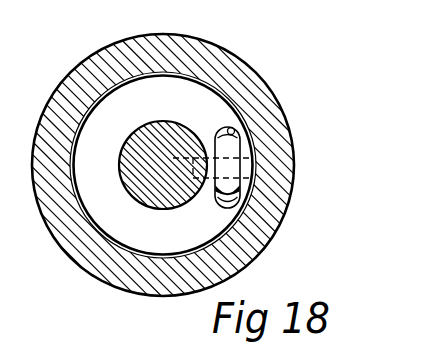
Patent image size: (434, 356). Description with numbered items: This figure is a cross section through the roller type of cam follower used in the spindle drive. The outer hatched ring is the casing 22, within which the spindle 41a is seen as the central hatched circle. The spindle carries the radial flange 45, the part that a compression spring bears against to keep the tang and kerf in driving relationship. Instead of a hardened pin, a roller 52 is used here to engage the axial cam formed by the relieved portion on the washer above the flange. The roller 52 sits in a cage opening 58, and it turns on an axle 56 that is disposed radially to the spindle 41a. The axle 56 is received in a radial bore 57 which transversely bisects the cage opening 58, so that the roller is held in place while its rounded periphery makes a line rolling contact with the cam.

The casing 22 is at (222, 62).
The radial flange 45 is at (107, 176).
The spindle 41a is at (152, 124).
The axle 56 is at (265, 150).
The radial bore 57 is at (222, 131).
The cage opening 58 is at (236, 130).
The roller 52 is at (214, 194).